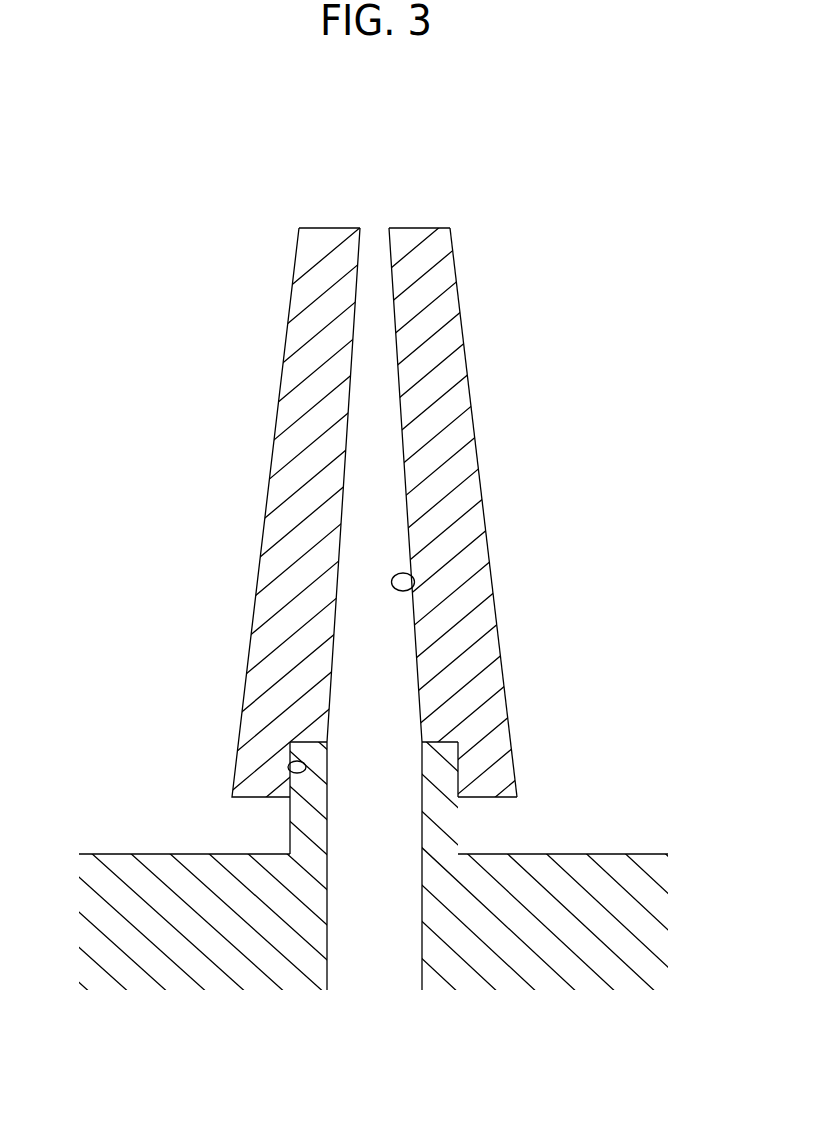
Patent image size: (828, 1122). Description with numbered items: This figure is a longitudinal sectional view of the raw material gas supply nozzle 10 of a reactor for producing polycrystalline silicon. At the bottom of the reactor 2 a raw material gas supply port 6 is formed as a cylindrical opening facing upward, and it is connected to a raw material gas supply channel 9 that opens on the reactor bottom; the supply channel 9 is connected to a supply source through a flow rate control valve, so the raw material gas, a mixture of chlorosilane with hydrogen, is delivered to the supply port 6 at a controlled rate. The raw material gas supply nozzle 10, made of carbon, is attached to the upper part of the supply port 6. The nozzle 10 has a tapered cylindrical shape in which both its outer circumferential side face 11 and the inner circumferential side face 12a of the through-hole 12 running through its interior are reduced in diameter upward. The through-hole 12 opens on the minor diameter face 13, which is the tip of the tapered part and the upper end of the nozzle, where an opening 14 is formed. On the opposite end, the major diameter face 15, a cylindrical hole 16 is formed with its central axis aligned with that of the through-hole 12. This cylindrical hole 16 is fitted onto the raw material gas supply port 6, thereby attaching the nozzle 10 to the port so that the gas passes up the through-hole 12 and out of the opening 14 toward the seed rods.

The reactor 2 is at (608, 854).
The raw material gas supply port 6 is at (290, 825).
The raw material gas supply channel 9 is at (327, 928).
The raw material gas supply nozzle 10 is at (414, 477).
The outer circumferential side face 11 is at (465, 345).
The through-hole 12 is at (389, 518).
The inner circumferential side face 12a is at (415, 582).
The minor diameter face 13 is at (427, 228).
The opening 14 is at (378, 214).
The major diameter face 15 is at (488, 798).
The cylindrical hole 16 is at (288, 767).